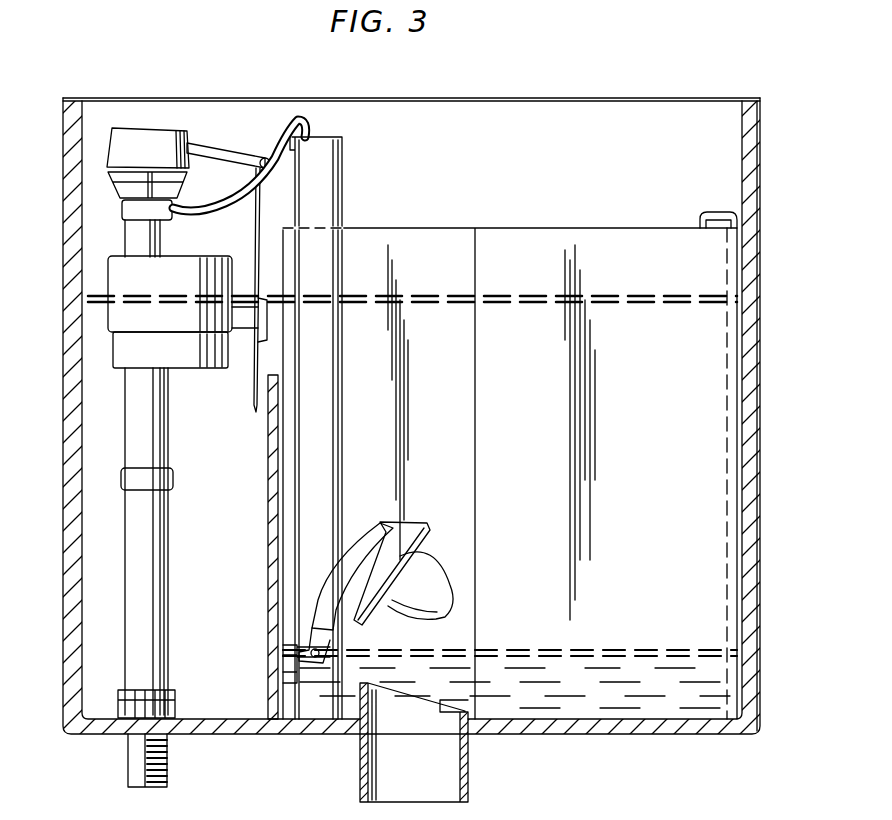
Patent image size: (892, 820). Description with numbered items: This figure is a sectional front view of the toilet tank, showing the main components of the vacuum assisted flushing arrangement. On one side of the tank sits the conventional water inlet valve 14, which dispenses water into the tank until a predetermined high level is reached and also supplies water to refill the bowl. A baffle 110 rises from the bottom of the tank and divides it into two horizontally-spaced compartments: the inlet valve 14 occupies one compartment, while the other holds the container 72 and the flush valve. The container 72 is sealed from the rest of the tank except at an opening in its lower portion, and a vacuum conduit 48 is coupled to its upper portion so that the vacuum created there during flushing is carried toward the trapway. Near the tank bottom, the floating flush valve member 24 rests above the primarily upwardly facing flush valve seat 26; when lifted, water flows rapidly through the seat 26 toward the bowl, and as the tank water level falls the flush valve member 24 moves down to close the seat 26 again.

The water inlet valve 14 is at (141, 122).
The container 72 is at (512, 216).
The vacuum conduit 48 is at (726, 210).
The baffle 110 is at (262, 672).
The flush valve member 24 is at (441, 605).
The flush valve seat 26 is at (444, 705).